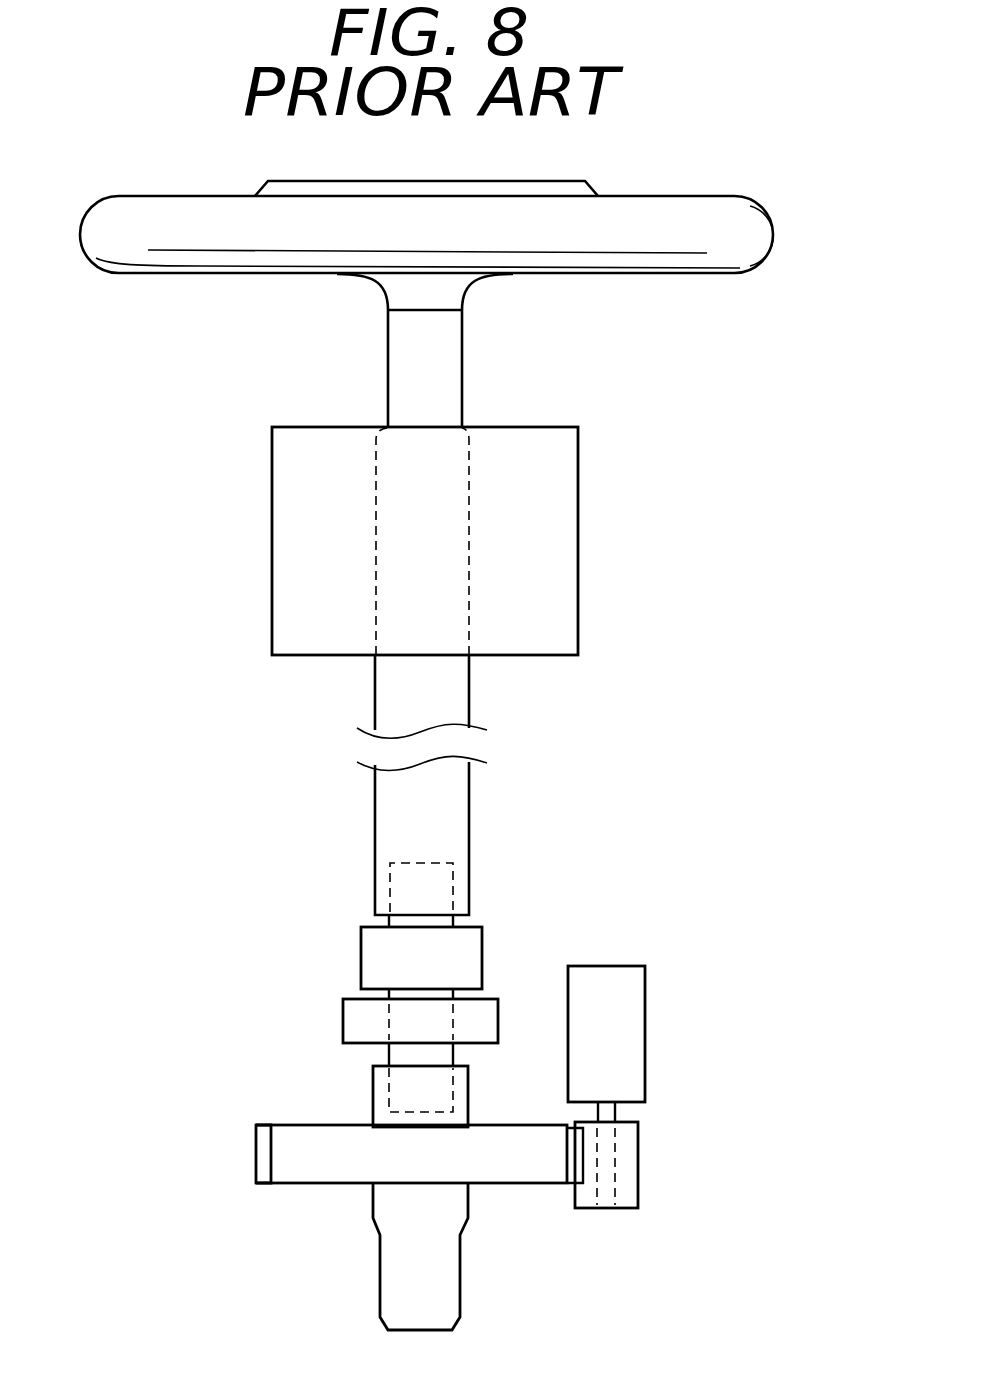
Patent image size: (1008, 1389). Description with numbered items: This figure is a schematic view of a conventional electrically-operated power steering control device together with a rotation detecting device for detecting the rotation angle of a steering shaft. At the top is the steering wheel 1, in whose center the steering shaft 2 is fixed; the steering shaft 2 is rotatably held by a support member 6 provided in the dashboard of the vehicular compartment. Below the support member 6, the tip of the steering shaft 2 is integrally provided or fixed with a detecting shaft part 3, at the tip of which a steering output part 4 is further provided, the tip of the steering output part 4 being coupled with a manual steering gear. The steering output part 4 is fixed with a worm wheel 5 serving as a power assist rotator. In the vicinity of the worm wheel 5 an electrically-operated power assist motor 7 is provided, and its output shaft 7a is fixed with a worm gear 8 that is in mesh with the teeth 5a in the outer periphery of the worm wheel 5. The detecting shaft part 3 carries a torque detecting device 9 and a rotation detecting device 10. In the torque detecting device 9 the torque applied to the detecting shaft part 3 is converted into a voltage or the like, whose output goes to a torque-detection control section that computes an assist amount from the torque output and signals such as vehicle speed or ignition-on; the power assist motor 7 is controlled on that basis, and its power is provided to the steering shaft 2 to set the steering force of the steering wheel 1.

The steering wheel 1 is at (752, 243).
The steering shaft 2 is at (458, 683).
The detecting shaft part 3 is at (443, 923).
The steering output part 4 is at (445, 1290).
The worm wheel 5 is at (292, 1142).
The teeth 5a is at (262, 1160).
The support member 6 is at (555, 543).
The power assist motor 7 is at (637, 999).
The output shaft 7a is at (607, 1112).
The worm gear 8 is at (627, 1173).
The torque detecting device 9 is at (373, 943).
The rotation detecting device 10 is at (358, 1020).